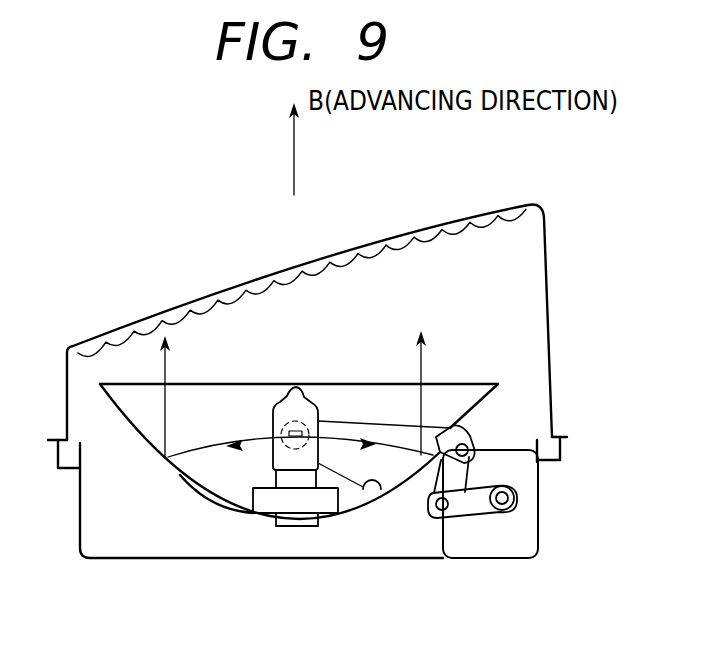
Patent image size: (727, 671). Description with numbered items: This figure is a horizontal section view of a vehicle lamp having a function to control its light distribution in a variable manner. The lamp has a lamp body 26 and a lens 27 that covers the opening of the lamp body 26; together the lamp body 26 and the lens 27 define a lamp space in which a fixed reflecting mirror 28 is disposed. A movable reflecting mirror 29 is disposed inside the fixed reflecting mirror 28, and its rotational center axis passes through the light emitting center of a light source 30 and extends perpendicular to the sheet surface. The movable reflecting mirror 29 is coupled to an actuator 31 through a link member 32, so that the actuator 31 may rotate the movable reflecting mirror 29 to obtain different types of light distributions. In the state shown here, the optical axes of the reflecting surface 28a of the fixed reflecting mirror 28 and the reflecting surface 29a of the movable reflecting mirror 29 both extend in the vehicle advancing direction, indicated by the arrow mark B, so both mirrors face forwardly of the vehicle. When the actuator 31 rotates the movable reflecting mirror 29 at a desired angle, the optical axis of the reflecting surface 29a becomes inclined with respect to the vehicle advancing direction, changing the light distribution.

The lamp body 26 is at (288, 558).
The lens 27 is at (348, 250).
The fixed reflecting mirror 28 is at (178, 472).
The reflecting surface of the fixed reflecting mirror 28a is at (217, 483).
The movable reflecting mirror 29 is at (442, 410).
The reflecting surface of the movable reflecting mirror 29a is at (363, 490).
The light source 30 is at (299, 387).
The actuator 31 is at (512, 542).
The link member 32 is at (477, 503).